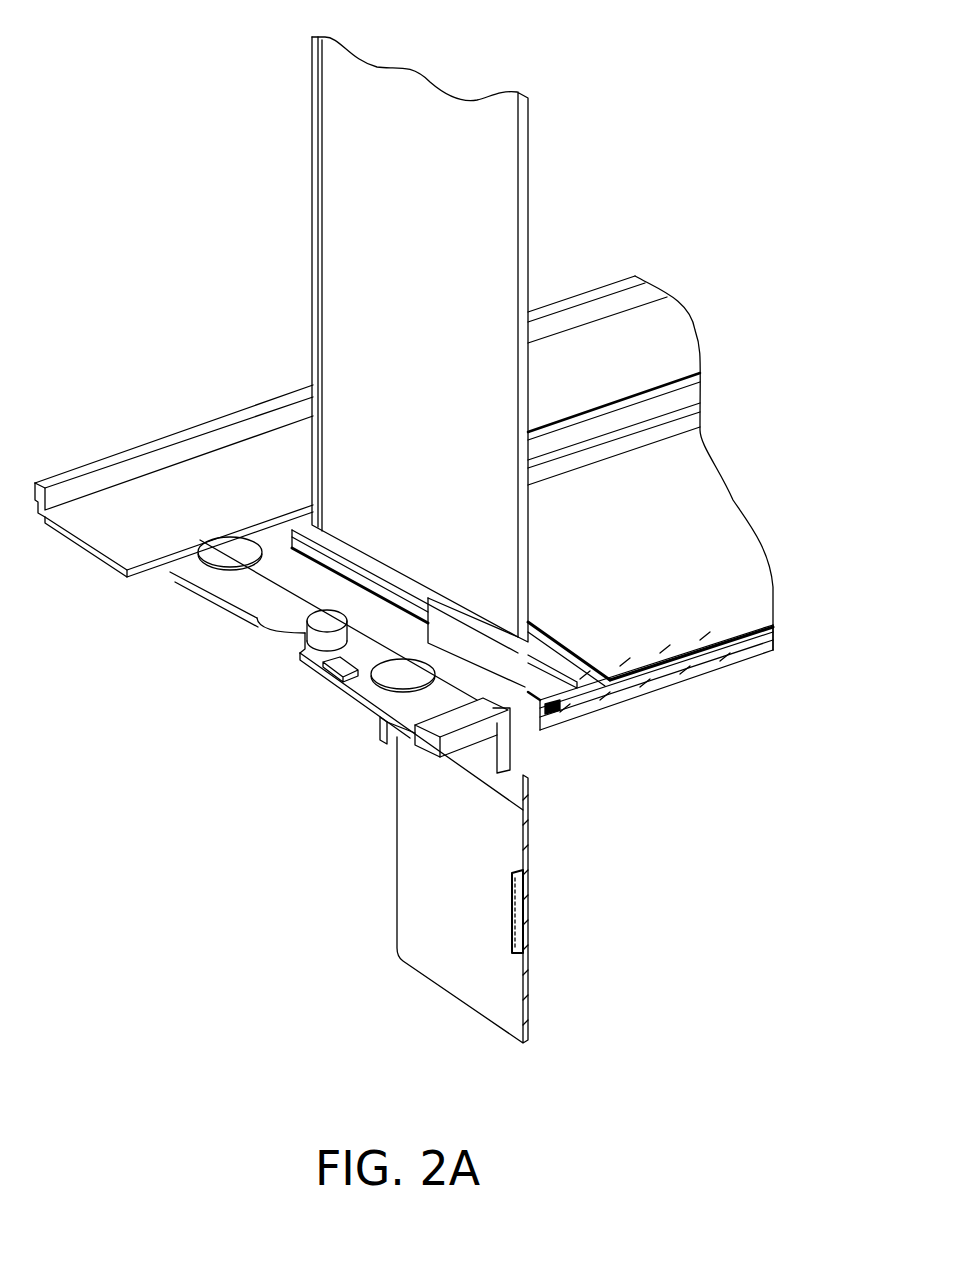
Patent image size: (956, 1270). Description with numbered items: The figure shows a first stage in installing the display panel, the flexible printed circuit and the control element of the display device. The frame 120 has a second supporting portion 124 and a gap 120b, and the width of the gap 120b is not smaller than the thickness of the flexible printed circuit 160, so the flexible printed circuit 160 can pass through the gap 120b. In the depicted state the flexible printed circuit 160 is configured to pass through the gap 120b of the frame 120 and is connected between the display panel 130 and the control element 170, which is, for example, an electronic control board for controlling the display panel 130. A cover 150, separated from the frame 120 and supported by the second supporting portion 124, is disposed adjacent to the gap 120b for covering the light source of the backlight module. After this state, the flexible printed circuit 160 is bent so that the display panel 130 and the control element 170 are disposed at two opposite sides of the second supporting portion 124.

The frame 120 is at (138, 500).
The gap 120b is at (528, 735).
The second supporting portion 124 is at (720, 665).
The display panel 130 is at (340, 165).
The cover 150 is at (313, 533).
The flexible printed circuit 160 is at (510, 778).
The control element 170 is at (462, 973).